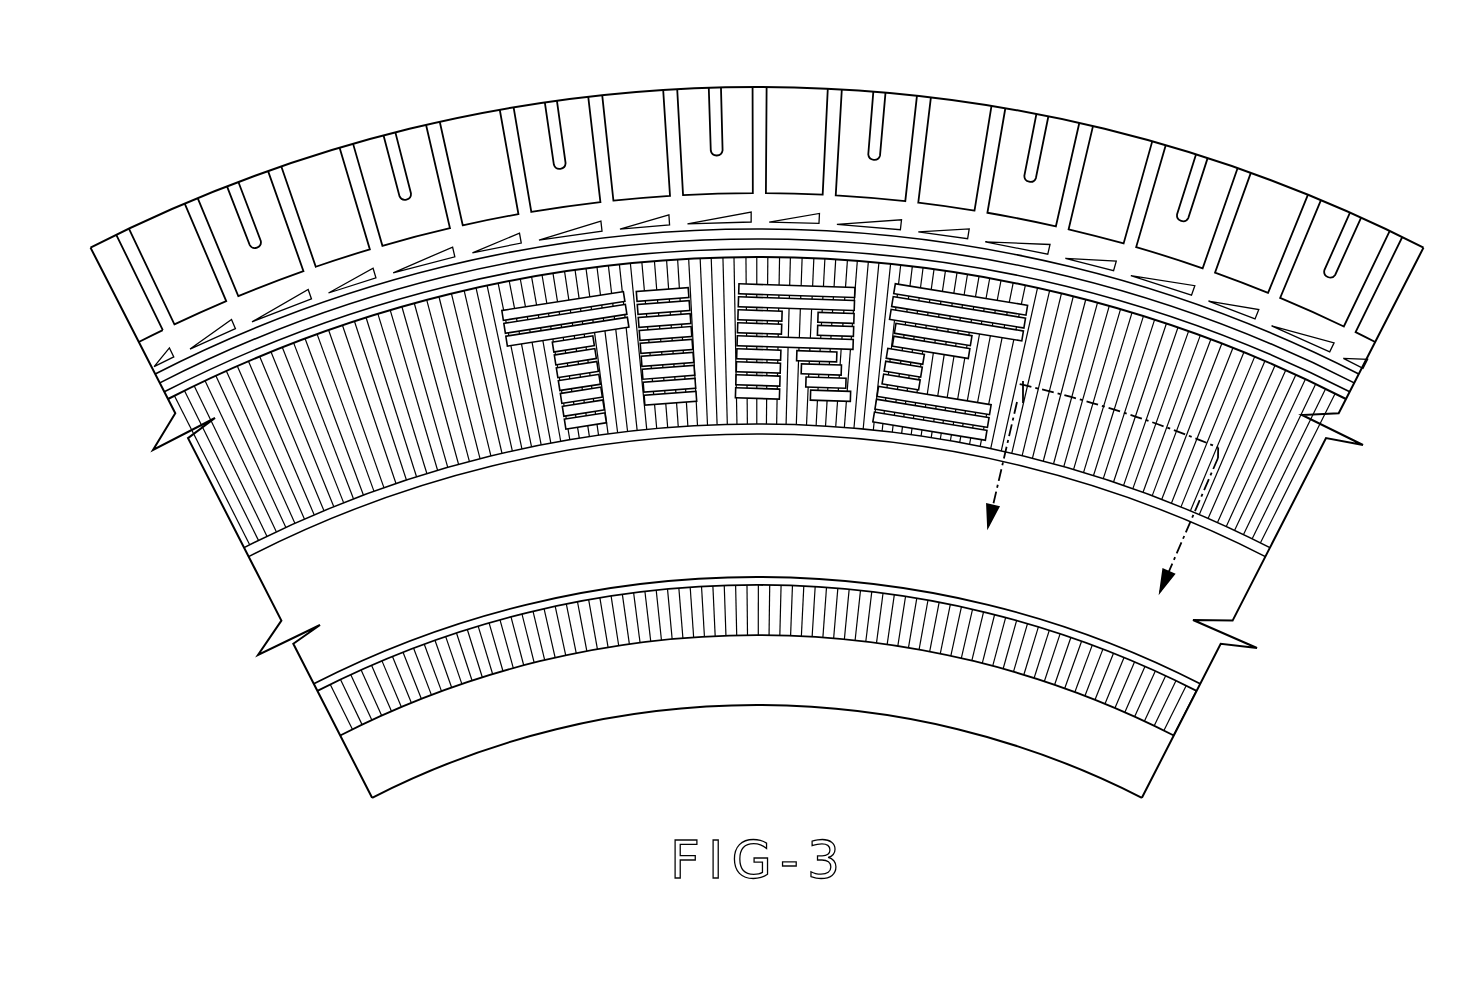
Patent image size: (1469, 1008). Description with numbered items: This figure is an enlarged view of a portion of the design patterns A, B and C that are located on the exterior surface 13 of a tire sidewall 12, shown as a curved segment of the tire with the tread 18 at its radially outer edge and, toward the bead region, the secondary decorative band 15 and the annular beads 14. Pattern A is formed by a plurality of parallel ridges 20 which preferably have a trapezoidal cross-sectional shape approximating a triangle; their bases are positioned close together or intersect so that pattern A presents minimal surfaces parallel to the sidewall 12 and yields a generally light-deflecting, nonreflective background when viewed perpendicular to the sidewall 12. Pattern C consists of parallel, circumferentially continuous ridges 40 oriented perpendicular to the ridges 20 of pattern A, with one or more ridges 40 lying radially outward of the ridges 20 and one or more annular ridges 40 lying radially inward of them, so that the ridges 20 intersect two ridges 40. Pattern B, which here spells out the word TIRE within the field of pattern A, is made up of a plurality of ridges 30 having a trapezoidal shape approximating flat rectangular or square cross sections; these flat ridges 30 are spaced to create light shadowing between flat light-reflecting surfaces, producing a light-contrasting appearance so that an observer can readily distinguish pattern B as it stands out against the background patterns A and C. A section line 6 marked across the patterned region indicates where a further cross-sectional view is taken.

The section line 6- 6 is at (1093, 503).
The sidewall 12 is at (306, 574).
The exterior surface 13 is at (1180, 643).
The annular beads 14 is at (1177, 763).
The secondary decorative band 15 is at (1183, 708).
The tread 18 is at (1180, 149).
The ridges 20 is at (252, 474).
The ridges 30 is at (568, 302).
The ridges 40 is at (1354, 376).